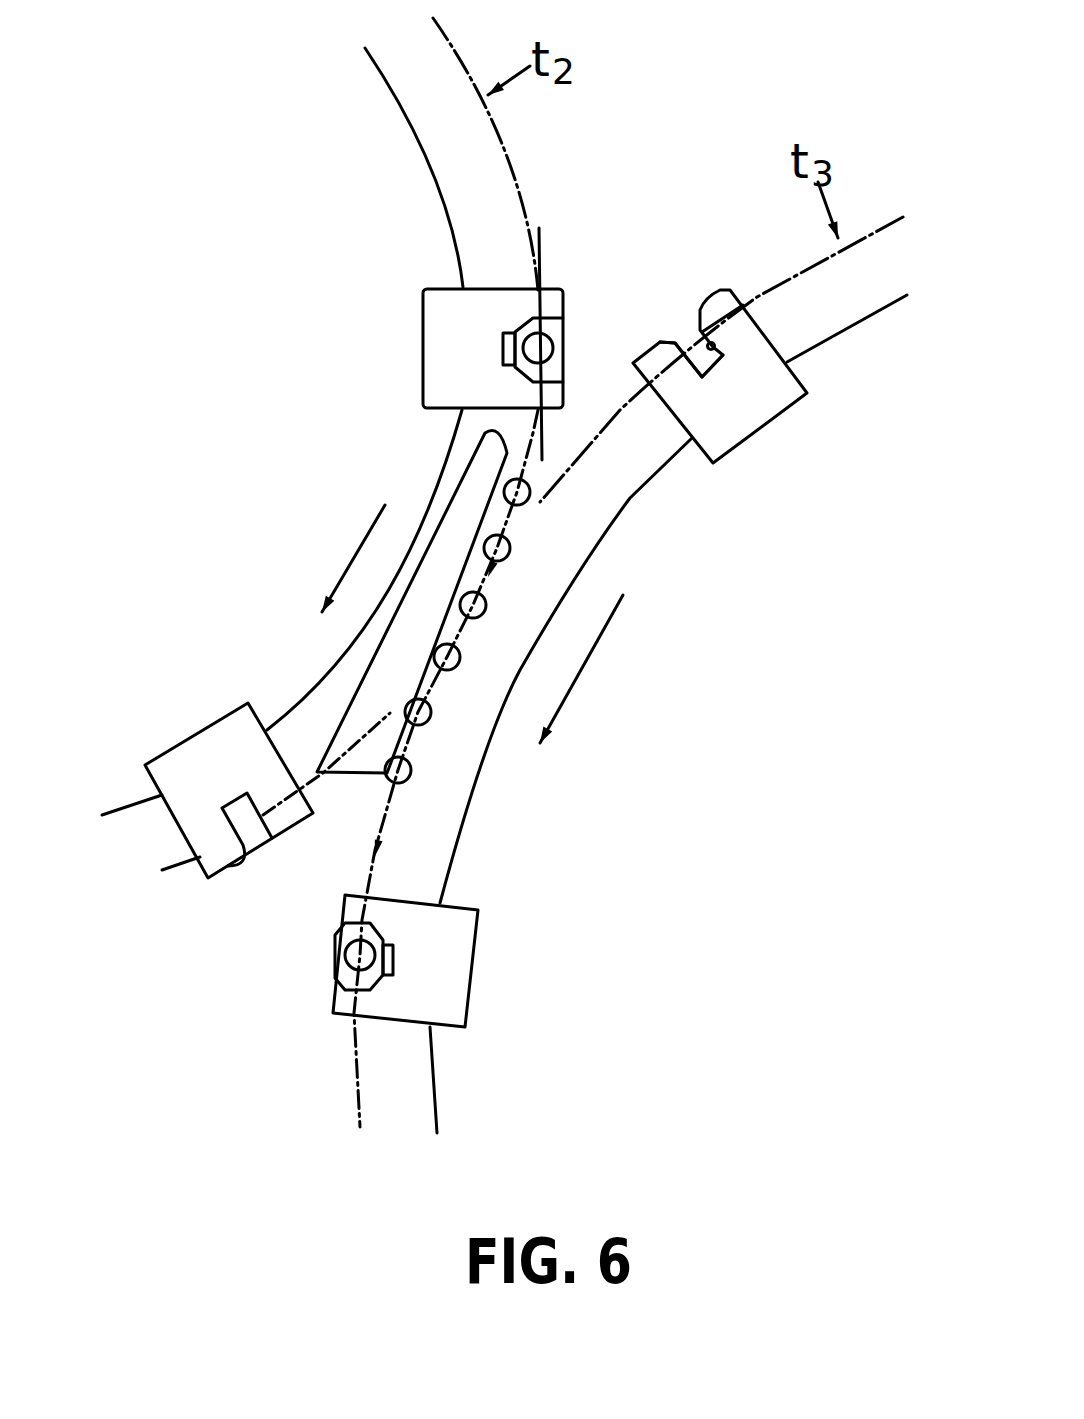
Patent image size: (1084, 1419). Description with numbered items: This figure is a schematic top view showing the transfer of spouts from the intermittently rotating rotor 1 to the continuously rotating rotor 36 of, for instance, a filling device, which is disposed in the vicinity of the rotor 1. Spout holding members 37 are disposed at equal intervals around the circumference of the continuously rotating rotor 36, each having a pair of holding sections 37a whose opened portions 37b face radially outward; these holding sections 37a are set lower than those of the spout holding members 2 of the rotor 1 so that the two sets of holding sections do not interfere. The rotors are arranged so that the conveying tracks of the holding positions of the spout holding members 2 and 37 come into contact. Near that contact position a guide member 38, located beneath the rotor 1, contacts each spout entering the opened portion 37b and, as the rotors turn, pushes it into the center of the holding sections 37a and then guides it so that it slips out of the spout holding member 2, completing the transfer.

The intermittently rotating rotor 1 is at (147, 452).
The spout holding member 2 is at (445, 318).
The continuously rotating rotor 36 is at (925, 763).
The spout holding member 37 is at (763, 410).
The holding section 37a is at (720, 350).
The opened portion 37b is at (688, 330).
The guide member 38 is at (468, 486).